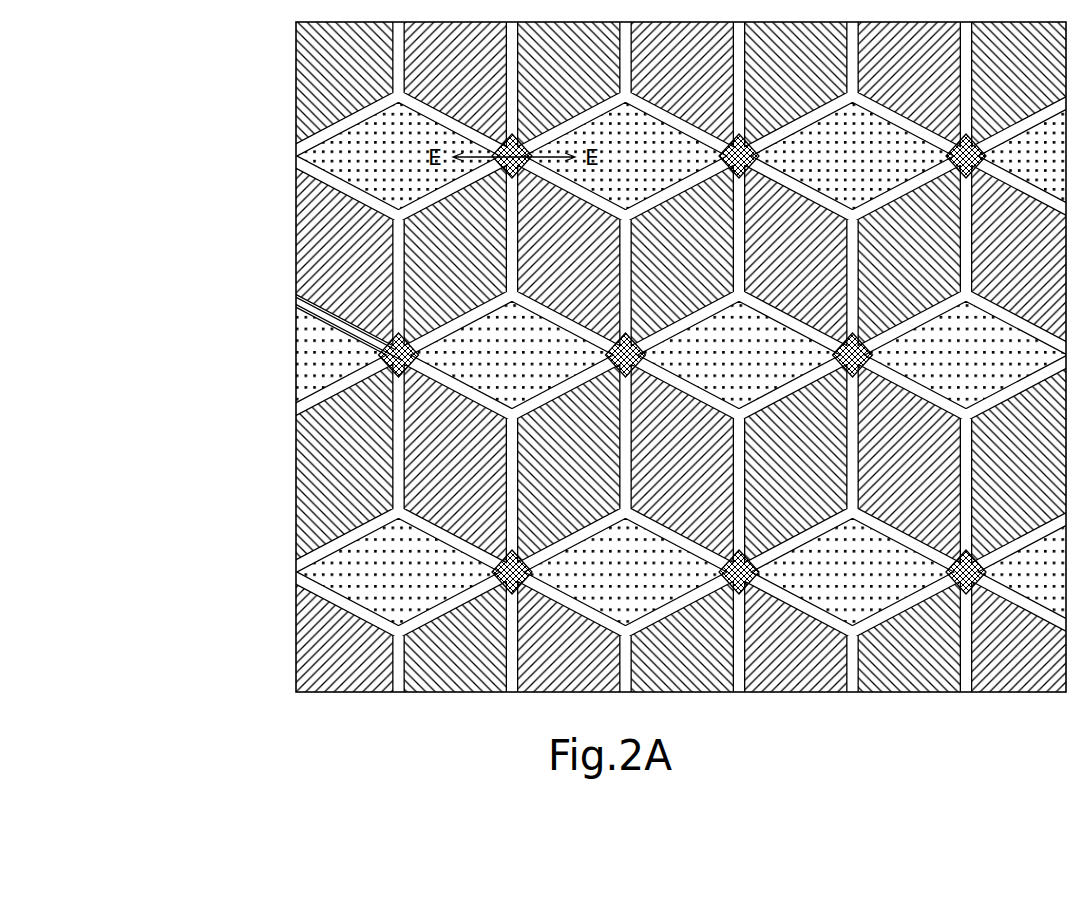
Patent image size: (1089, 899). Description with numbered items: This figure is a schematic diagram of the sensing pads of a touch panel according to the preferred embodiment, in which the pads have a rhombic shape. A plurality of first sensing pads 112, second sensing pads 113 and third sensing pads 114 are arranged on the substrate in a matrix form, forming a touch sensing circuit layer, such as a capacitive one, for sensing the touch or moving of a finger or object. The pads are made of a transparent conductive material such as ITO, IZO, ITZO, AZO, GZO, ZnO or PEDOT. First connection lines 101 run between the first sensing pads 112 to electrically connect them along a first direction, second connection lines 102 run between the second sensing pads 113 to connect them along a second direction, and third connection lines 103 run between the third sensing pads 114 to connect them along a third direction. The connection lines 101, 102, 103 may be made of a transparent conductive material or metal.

The first connection lines 101 is at (383, 360).
The second connection lines 102 is at (390, 350).
The third connection lines 103 is at (383, 357).
The first sensing pads 112 is at (322, 462).
The second sensing pads 113 is at (333, 670).
The third sensing pads 114 is at (343, 568).